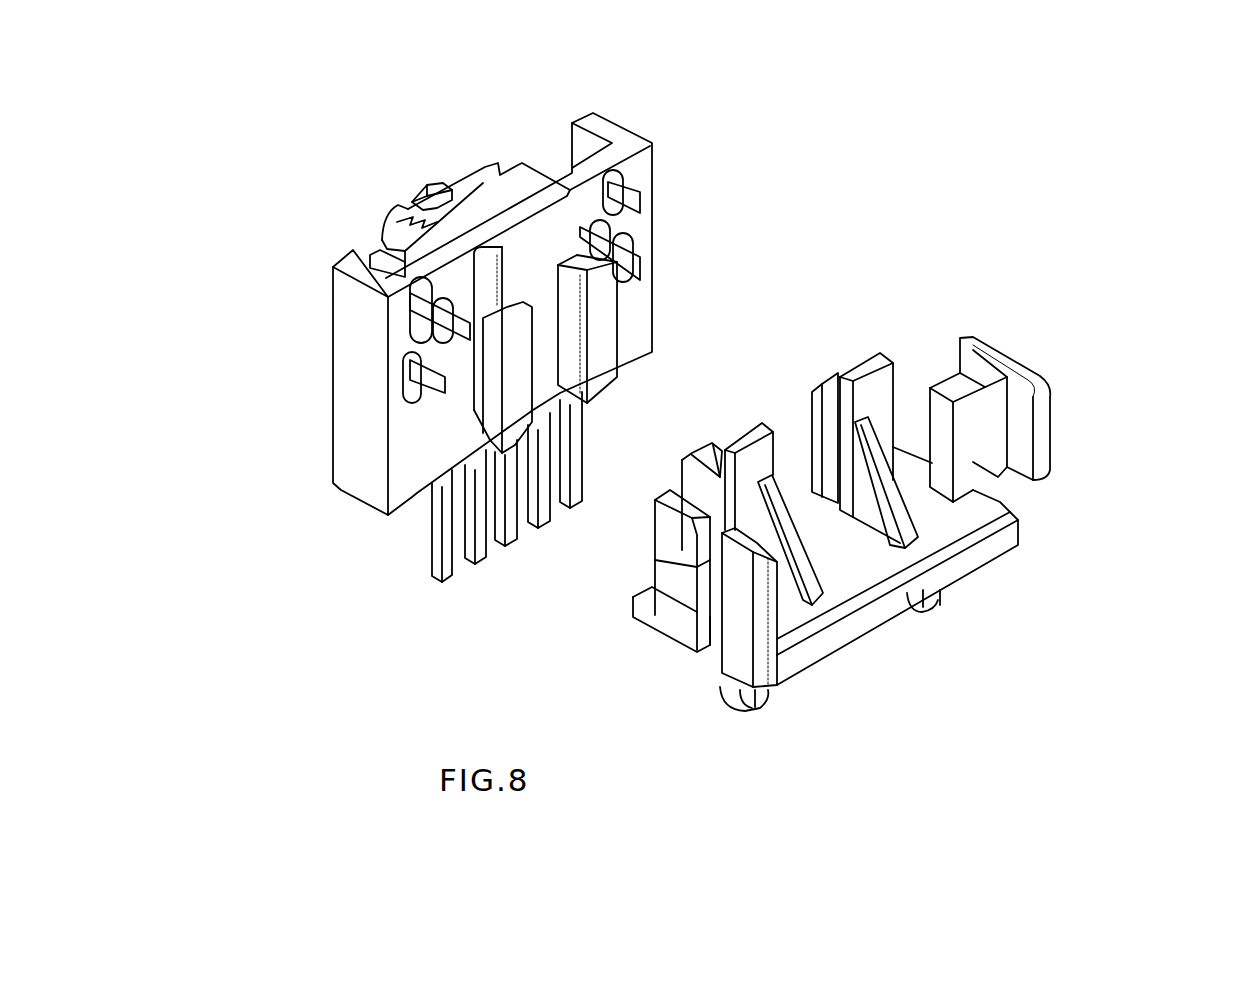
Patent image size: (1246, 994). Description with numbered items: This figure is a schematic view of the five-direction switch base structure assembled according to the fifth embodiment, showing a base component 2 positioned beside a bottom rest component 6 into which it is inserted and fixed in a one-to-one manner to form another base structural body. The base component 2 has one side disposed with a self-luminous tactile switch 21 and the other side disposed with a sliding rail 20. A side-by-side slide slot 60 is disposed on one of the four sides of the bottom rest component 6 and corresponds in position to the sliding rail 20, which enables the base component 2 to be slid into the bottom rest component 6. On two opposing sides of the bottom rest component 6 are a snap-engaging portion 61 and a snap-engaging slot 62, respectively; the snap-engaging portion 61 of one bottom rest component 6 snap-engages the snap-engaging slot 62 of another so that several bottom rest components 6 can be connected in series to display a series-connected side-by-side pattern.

The base component 2 is at (368, 403).
The sliding rail 20 is at (597, 308).
The self-luminous tactile switch 21 is at (393, 213).
The bottom rest component 6 is at (890, 607).
The side-by-side slide slot 60 is at (833, 420).
The snap-engaging portion 61 is at (1023, 422).
The snap-engaging slot 62 is at (697, 590).